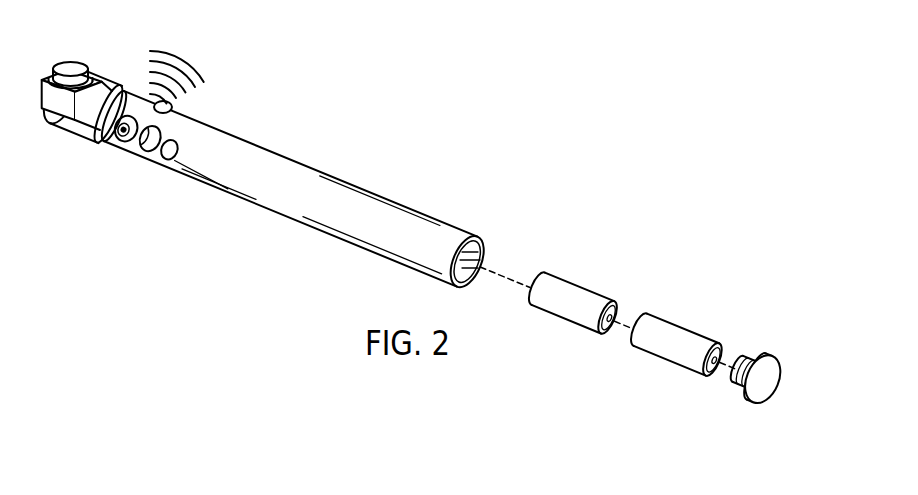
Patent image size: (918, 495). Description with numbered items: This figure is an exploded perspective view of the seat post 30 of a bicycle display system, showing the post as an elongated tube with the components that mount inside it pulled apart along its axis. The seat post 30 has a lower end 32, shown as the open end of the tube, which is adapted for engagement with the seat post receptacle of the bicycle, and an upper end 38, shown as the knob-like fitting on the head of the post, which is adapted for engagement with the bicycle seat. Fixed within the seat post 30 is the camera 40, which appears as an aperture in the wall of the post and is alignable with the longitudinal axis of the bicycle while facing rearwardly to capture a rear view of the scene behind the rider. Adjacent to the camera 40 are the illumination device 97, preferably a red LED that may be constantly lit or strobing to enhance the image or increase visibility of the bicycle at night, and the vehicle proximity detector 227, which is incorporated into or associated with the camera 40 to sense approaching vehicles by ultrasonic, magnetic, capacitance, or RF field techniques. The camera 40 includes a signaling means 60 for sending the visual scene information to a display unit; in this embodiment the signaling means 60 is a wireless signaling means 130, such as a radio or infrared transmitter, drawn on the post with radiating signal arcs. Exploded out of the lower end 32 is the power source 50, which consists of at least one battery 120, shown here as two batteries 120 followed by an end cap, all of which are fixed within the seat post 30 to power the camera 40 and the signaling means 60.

The seat post 30 is at (327, 146).
The lower end 32 is at (412, 213).
The upper end 38 is at (73, 64).
The camera 40 is at (119, 140).
The power source 50 is at (631, 268).
The signaling means 60 is at (224, 44).
The illumination device 97 is at (139, 145).
The battery 120 is at (565, 328).
The wireless signaling means 130 is at (173, 110).
The vehicle proximity detector 227 is at (174, 161).